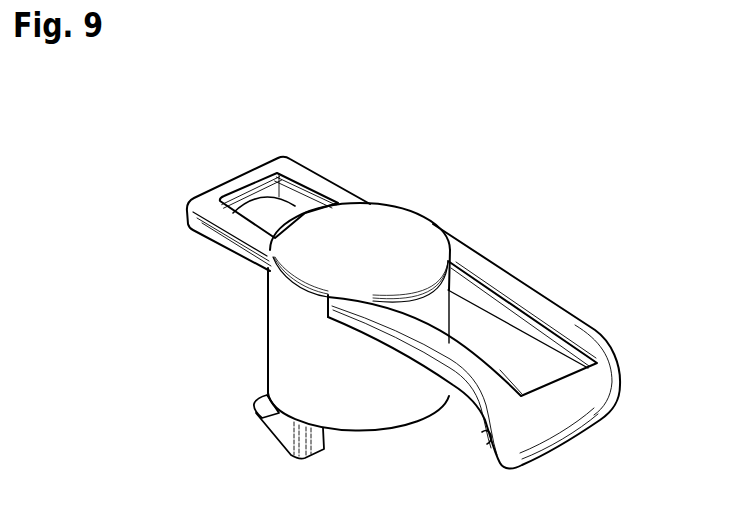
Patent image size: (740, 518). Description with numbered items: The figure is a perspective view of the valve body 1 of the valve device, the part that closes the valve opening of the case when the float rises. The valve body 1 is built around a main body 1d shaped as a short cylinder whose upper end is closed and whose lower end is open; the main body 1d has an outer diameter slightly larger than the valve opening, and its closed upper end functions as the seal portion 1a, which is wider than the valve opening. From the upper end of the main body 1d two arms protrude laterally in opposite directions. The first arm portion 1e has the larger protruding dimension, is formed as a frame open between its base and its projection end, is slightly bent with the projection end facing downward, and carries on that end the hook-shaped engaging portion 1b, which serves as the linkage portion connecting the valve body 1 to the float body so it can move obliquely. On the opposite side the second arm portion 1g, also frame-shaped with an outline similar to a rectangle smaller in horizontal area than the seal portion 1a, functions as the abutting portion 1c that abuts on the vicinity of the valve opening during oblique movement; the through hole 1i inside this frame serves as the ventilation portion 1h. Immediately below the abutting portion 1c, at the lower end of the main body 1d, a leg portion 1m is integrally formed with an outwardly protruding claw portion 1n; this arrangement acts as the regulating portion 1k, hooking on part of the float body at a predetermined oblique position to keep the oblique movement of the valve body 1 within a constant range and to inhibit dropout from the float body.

The valve body 1 is at (419, 175).
The seal portion 1a is at (400, 252).
The engaging portion 1b is at (482, 433).
The abutting portion 1c is at (242, 169).
The main body 1d is at (277, 320).
The first arm portion 1e is at (537, 292).
The second arm portion 1g is at (317, 181).
The ventilation portion 1h is at (247, 215).
The through hole 1i is at (208, 208).
The regulating portion 1k is at (257, 422).
The leg portion 1m is at (318, 440).
The claw portion 1n is at (263, 448).